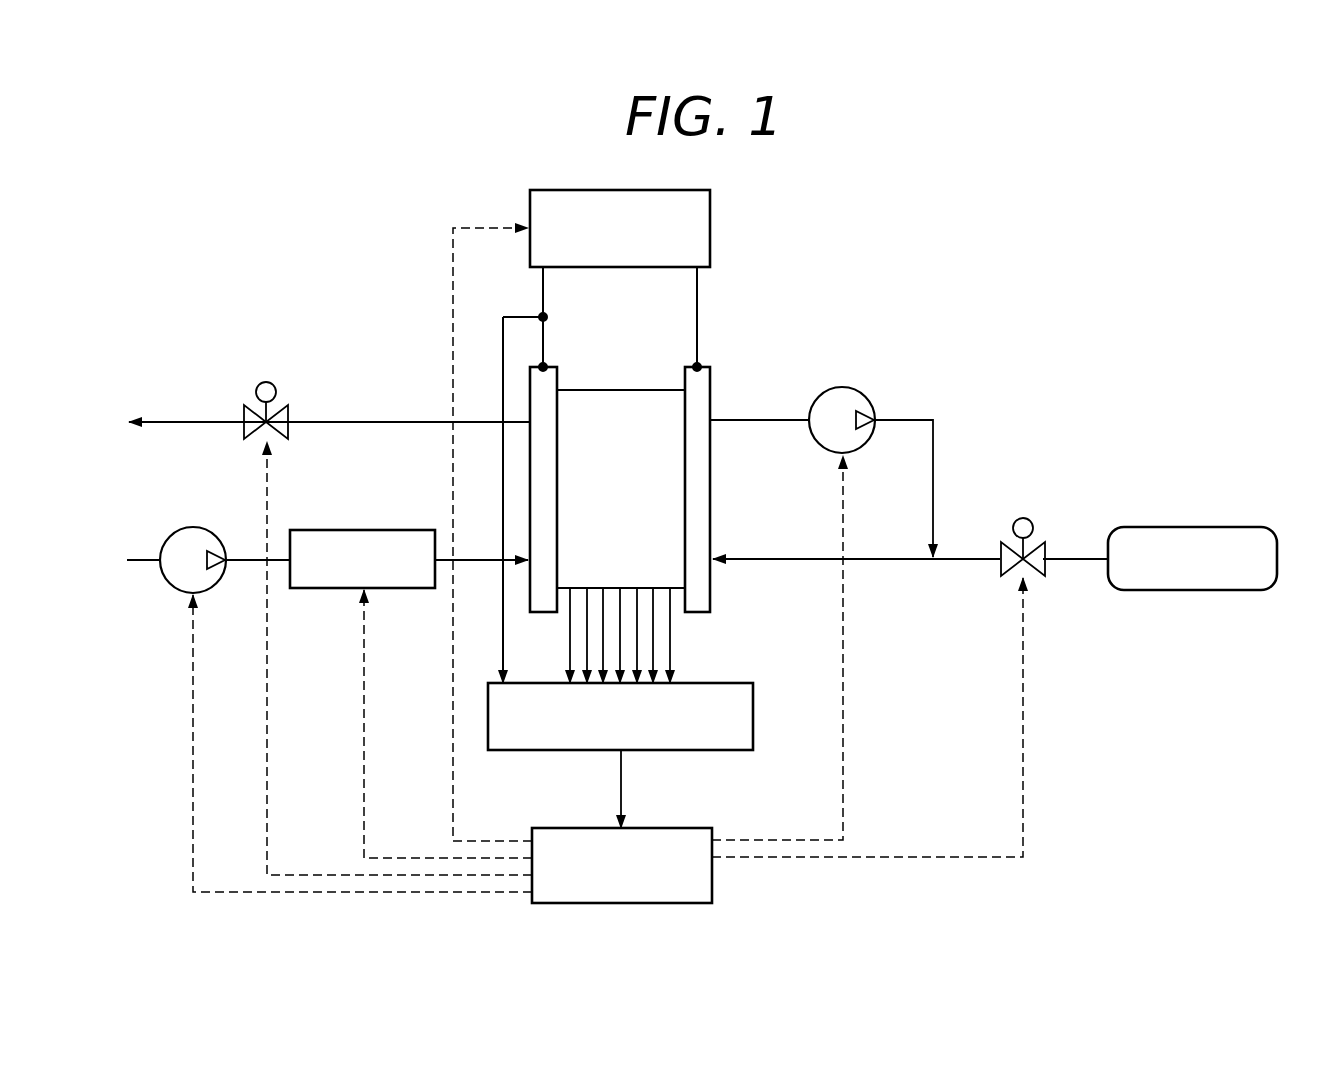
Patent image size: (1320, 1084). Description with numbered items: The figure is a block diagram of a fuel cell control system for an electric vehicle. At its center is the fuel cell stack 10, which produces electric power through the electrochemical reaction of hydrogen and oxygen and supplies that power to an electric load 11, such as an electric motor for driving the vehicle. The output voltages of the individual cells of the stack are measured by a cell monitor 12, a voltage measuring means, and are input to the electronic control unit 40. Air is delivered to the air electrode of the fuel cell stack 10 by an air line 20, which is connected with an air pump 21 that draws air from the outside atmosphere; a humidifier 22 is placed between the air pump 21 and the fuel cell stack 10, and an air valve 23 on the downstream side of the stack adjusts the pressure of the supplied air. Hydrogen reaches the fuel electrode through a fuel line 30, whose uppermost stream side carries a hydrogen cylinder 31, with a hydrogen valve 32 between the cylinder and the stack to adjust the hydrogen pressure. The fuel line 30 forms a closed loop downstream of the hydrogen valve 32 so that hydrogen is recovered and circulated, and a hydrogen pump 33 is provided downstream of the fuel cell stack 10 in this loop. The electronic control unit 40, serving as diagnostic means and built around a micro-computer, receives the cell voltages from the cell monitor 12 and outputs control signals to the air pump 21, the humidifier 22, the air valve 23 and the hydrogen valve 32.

The fuel cell stack 10 is at (632, 404).
The electric load 11 is at (712, 219).
The cell monitor 12 is at (755, 711).
The air line 20 is at (358, 422).
The air pump 21 is at (200, 527).
The humidifier 22 is at (388, 530).
The air valve 23 is at (270, 381).
The fuel line 30 is at (905, 420).
The hydrogen cylinder 31 is at (1228, 527).
The hydrogen valve 32 is at (1027, 518).
The hydrogen pump 33 is at (848, 387).
The electronic control unit 40 is at (660, 828).